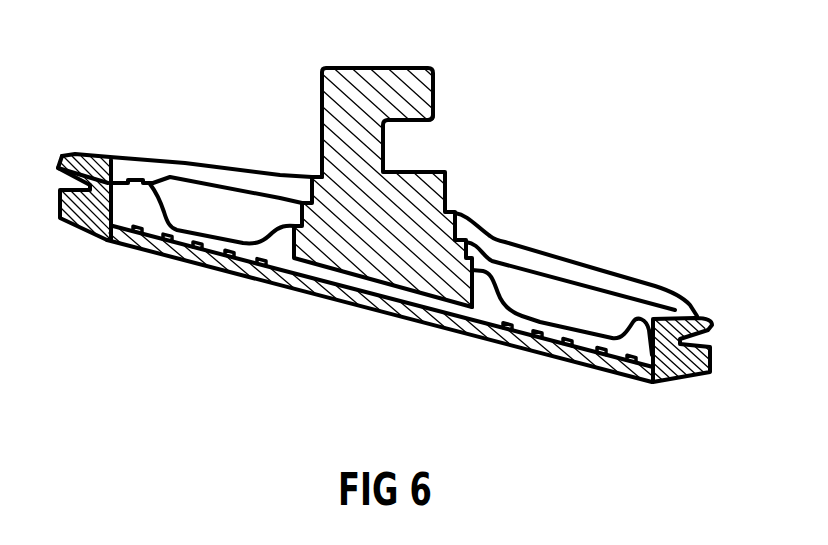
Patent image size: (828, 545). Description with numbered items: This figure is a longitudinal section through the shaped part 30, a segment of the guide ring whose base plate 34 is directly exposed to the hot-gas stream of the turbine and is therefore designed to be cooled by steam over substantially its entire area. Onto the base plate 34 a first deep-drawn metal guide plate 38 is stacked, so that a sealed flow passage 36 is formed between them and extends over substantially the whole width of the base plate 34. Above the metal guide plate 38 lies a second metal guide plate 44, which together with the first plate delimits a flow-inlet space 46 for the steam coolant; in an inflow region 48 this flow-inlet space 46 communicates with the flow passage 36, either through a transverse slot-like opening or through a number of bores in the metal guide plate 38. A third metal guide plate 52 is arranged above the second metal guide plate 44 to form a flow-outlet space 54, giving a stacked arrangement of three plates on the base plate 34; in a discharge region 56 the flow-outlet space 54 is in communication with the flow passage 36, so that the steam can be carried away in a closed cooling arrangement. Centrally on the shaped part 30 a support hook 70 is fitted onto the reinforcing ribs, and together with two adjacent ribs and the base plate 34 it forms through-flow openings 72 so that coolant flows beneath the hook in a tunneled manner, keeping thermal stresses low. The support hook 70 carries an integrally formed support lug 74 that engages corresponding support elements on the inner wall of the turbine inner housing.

The shaped part 30 is at (697, 316).
The base plate 34 is at (217, 272).
The flow passage 36 is at (343, 280).
The metal guide plate 38 is at (520, 333).
The second metal guide plate 44 is at (572, 283).
The flow-inlet space 46 is at (578, 307).
The inflow region 48 is at (707, 355).
The third metal guide plate 52 is at (197, 162).
The flow-outlet space 54 is at (150, 162).
The discharge region 56 is at (113, 172).
The support hook 70 is at (368, 68).
The through-flow opening 72 is at (432, 303).
The support lug 74 is at (434, 93).